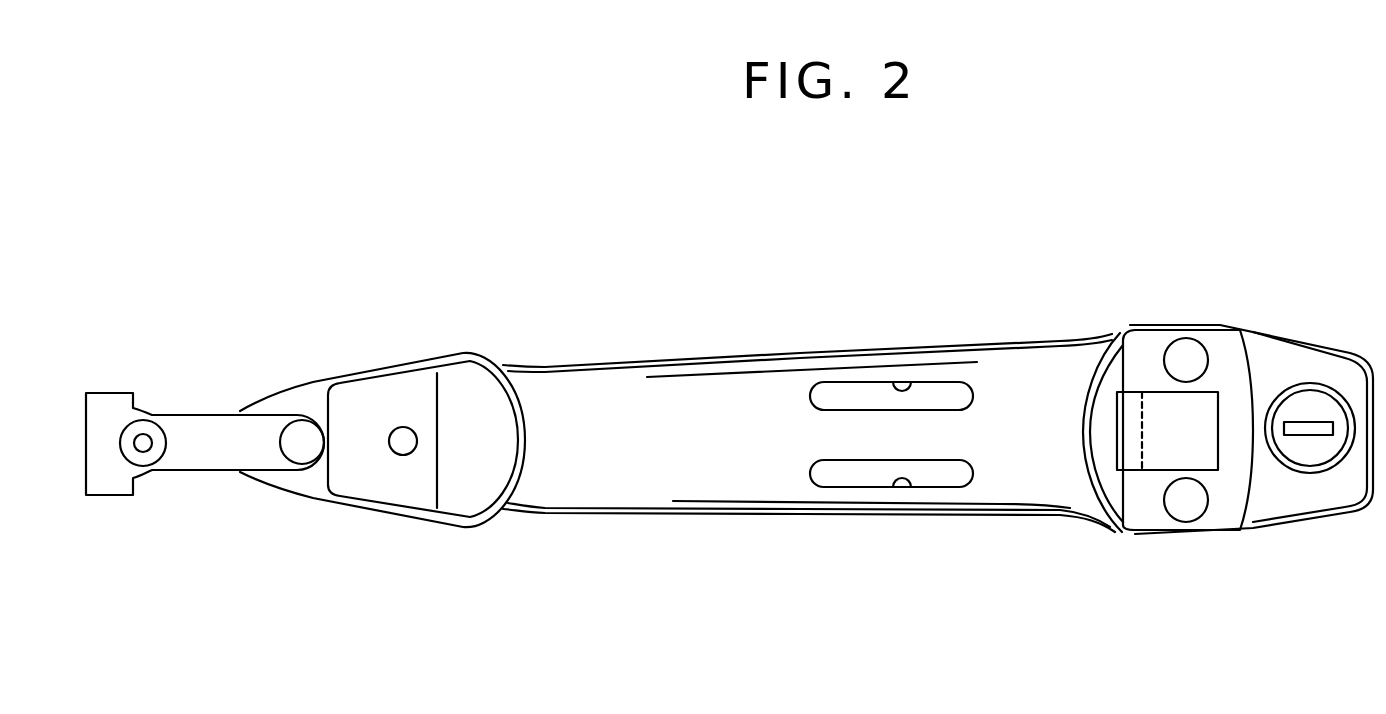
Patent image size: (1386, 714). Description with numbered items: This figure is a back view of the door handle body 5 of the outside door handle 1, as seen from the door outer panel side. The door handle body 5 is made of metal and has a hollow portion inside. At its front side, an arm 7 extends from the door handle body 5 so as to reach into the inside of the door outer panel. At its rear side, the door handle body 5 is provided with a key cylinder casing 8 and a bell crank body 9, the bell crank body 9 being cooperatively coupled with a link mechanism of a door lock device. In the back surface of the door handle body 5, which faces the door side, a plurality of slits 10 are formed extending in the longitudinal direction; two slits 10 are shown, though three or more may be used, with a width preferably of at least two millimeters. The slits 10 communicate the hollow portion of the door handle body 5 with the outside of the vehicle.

The outside door handle 1 is at (1014, 298).
The door handle body 5 is at (720, 322).
The arm 7 is at (160, 408).
The key cylinder casing 8 is at (1309, 403).
The bell crank body 9 is at (1158, 460).
The slits 10 is at (912, 383).